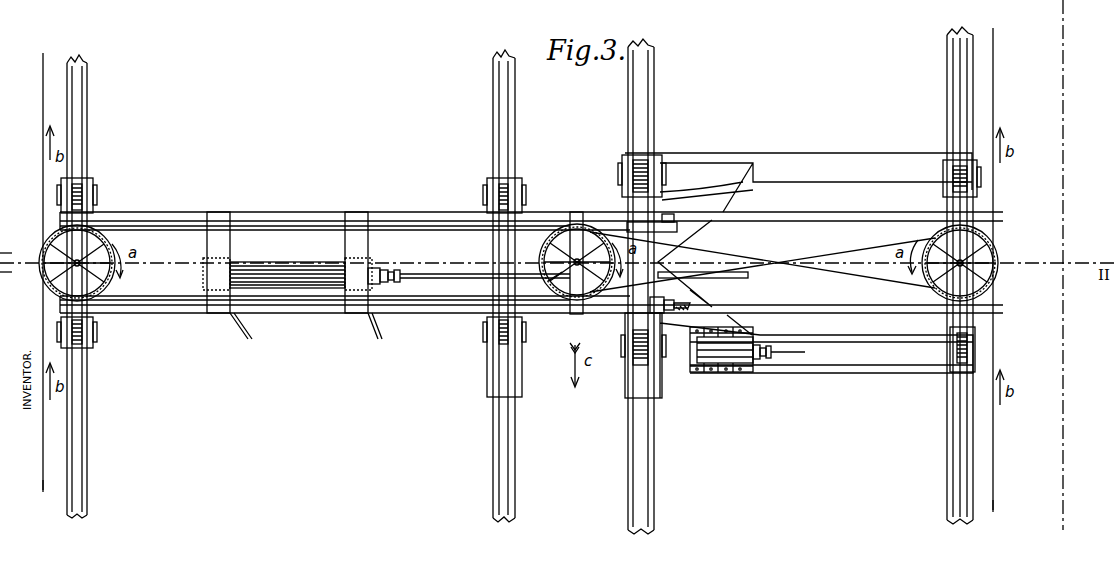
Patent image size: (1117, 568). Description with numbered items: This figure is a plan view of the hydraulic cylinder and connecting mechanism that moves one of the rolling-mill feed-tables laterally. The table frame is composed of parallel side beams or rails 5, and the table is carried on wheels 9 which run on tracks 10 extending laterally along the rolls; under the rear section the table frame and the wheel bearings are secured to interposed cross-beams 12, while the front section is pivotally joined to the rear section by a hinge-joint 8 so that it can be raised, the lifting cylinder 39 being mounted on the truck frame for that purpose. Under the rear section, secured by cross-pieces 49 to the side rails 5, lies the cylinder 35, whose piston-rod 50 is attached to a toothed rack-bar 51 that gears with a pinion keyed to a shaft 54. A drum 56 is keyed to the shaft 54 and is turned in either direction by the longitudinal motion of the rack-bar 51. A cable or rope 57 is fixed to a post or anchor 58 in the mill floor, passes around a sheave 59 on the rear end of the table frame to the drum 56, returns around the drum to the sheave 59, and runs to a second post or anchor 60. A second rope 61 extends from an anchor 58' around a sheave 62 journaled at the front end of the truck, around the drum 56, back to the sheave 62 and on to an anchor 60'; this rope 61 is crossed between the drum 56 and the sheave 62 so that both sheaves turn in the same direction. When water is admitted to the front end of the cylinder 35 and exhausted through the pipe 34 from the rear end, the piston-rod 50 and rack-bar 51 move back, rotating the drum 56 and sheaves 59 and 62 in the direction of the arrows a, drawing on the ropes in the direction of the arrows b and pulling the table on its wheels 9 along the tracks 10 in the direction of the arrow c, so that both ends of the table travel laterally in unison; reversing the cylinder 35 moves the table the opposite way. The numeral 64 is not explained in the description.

The side beams or rails 5 is at (405, 212).
The hinge-joint 8 is at (658, 263).
The wheels 9 is at (82, 192).
The tracks 10 is at (82, 112).
The cross-beams 12 is at (85, 331).
The pipe 34 is at (372, 331).
The cylinder 35 is at (289, 266).
The cylinder 39 is at (714, 375).
The cross-pieces 49 is at (287, 262).
The piston-rod 50 is at (432, 274).
The toothed rack-bar 51 is at (732, 278).
The shaft 54 is at (542, 282).
The drum 56 is at (550, 252).
The cable or rope 57 is at (36, 459).
The post or anchor 58 is at (31, 494).
The sheave 59 is at (45, 256).
The post or anchor 60 is at (31, 262).
The rope 61 is at (826, 256).
The sheave 62 is at (998, 272).
The support 64 is at (250, 333).
The anchor 60' is at (1008, 259).
The anchor 58' is at (1008, 513).